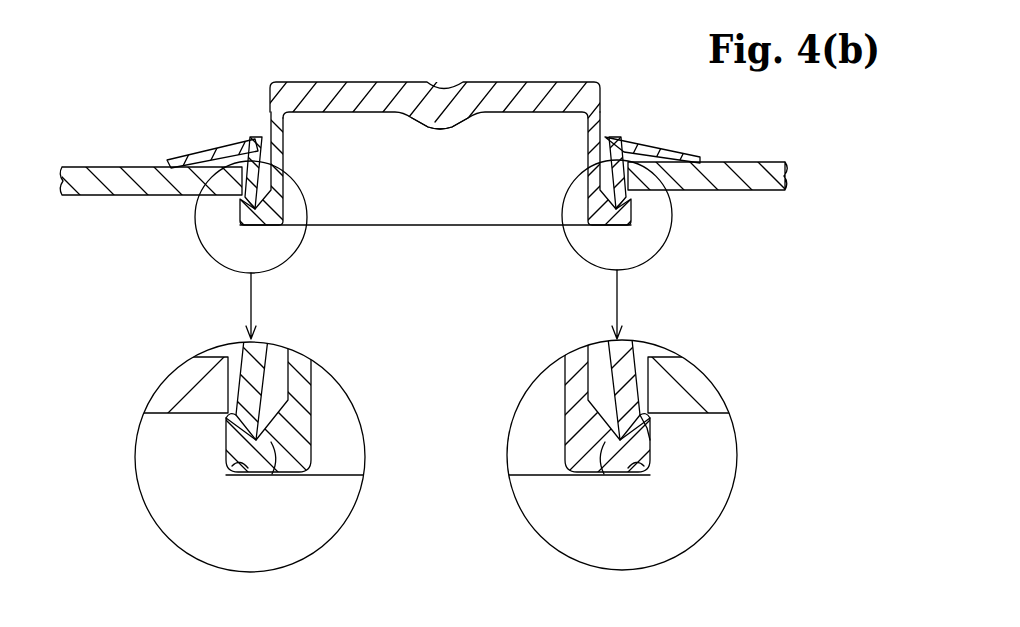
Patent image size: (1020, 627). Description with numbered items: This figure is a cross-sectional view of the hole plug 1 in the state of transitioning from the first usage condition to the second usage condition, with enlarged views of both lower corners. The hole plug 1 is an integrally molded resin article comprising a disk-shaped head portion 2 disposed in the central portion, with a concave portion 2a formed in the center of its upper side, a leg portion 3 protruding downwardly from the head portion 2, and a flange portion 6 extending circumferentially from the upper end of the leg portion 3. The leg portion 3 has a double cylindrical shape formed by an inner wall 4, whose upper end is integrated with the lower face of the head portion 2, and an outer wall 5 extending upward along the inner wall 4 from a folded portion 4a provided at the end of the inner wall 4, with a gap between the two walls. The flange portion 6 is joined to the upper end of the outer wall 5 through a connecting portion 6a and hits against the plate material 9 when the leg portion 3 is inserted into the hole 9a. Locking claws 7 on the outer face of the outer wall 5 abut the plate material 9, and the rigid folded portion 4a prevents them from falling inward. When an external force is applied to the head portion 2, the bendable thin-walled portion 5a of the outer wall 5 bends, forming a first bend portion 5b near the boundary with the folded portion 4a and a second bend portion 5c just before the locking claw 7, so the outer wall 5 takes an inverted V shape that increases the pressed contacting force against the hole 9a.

The hole plug 1 is at (567, 78).
The head portion 2 is at (333, 82).
The concave portion 2a is at (450, 88).
The leg portion 3 is at (227, 75).
The inner wall 4 is at (270, 125).
The folded portion 4a is at (363, 477).
The outer wall 5 is at (260, 137).
The thin-walled portion 5a is at (305, 525).
The first bend portion 5b is at (275, 458).
The second bend portion 5c is at (252, 468).
The flange portion 6 is at (187, 160).
The connecting portion 6a is at (612, 137).
The locking claw 7 is at (654, 430).
The plate material 9 is at (83, 172).
The hole 9a is at (228, 408).